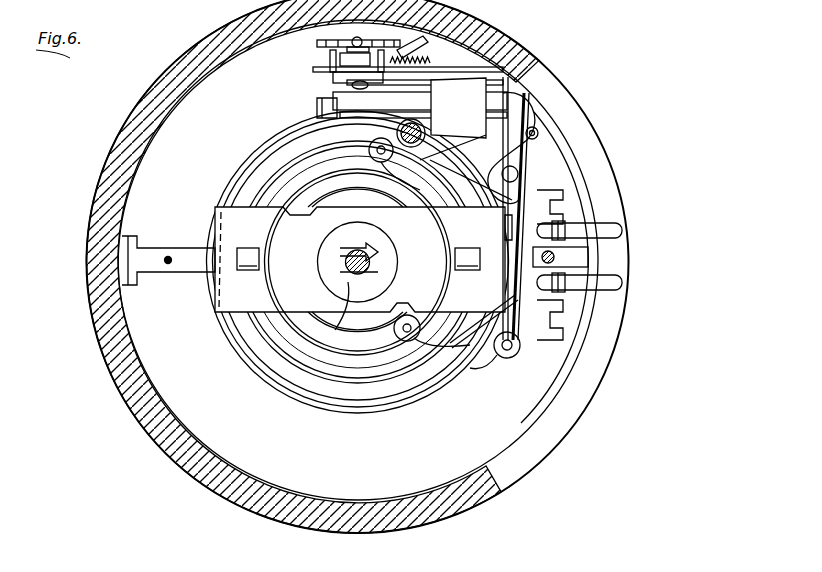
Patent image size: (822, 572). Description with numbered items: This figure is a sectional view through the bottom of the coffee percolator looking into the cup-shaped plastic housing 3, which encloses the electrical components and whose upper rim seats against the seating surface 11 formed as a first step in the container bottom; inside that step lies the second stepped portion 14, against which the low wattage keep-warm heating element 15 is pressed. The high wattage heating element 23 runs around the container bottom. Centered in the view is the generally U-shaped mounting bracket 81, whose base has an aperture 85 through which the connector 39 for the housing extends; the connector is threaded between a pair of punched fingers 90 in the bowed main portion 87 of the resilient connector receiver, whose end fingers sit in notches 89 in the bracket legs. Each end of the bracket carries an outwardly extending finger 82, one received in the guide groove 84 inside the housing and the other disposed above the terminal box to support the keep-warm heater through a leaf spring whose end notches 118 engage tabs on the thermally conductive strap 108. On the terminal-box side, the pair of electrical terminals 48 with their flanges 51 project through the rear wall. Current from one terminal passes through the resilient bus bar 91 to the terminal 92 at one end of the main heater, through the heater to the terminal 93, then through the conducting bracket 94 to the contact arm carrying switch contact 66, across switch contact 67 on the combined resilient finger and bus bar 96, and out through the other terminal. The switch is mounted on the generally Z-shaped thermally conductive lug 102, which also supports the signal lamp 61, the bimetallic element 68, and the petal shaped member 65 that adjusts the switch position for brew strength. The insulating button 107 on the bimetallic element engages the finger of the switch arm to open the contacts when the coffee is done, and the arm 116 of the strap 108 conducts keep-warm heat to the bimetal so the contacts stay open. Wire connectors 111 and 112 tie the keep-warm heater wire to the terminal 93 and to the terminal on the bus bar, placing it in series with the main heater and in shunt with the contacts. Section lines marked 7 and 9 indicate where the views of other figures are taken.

The housing 3 is at (118, 166).
The section line 7 is at (336, 127).
The section line 9 is at (527, 176).
The seating surface 11 is at (540, 438).
The second stepped portion 14 is at (308, 451).
The keep-warm heating element 15 is at (567, 355).
The high wattage heating element 23 is at (270, 164).
The connector 39 is at (372, 268).
The electrical terminals 48 is at (622, 230).
The flanges 51 is at (560, 257).
The signal lamp 61 is at (330, 62).
The petal shaped member 65 is at (317, 44).
The switch contact 66 is at (320, 72).
The switch contact 67 is at (347, 84).
The bimetallic element 68 is at (420, 105).
The mounting bracket 81 is at (252, 306).
The finger 82 is at (172, 268).
The groove 84 is at (130, 262).
The aperture 85 is at (320, 262).
The main portion 87 is at (348, 314).
The notches 89 is at (248, 252).
The fingers 90 is at (359, 243).
The resilient bus bar 91 is at (492, 362).
The terminal 92 is at (407, 345).
The terminal 93 is at (394, 167).
The conducting bracket 94 is at (478, 110).
The combined resilient finger and bus bar 96 is at (520, 100).
The thermally conductive lug 102 is at (480, 134).
The insulating button 107 is at (317, 108).
The thermally conductive strap 108 is at (563, 205).
The wire connector 111 is at (428, 165).
The wire connector 112 is at (472, 239).
The arm 116 is at (540, 108).
The notch 118 is at (563, 338).